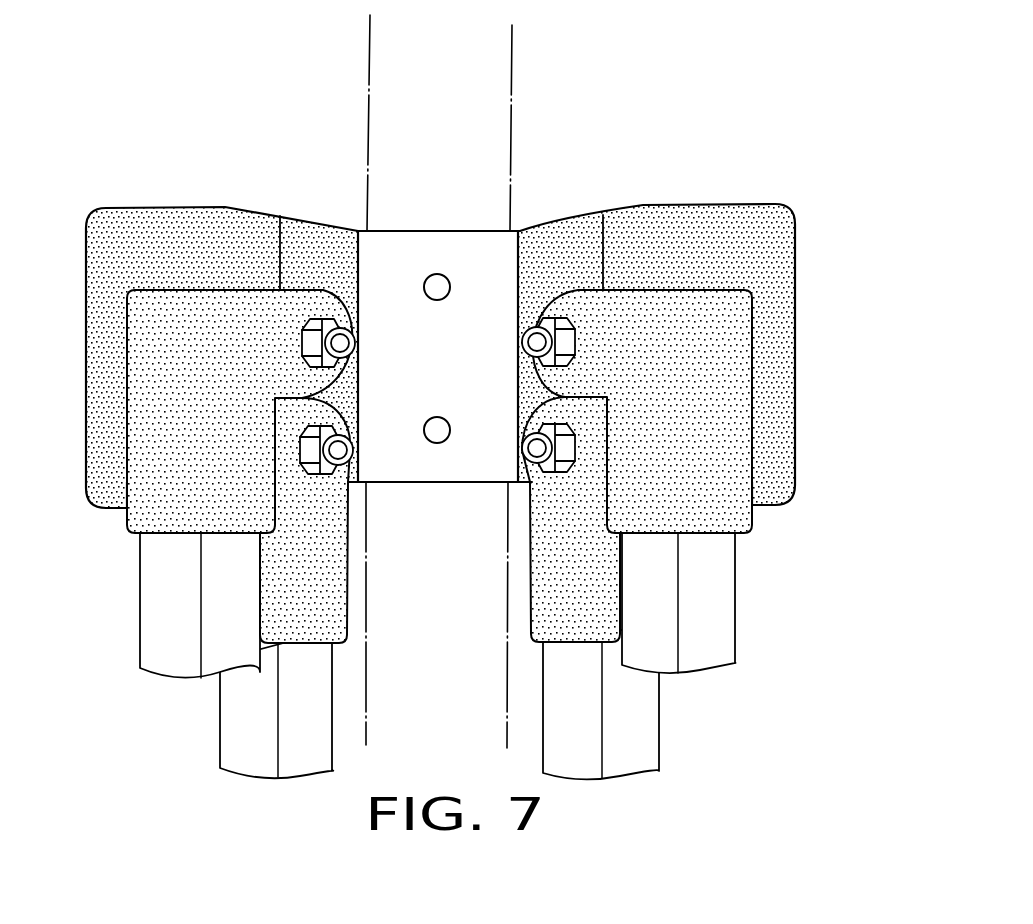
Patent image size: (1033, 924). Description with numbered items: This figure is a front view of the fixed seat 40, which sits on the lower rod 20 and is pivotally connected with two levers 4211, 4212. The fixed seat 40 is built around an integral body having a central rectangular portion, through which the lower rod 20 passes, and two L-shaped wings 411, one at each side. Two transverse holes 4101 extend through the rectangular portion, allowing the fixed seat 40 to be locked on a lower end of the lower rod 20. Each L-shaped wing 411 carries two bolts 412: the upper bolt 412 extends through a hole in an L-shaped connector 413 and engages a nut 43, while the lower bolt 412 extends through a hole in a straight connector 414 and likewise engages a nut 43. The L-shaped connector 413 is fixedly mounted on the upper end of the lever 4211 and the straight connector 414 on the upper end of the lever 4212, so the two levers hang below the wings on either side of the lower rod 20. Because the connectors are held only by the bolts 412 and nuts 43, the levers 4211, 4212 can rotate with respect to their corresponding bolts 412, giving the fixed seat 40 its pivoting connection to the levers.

The lower rod 20 is at (512, 62).
The fixed seat 40 is at (467, 397).
The L-shaped wing 411 is at (688, 203).
The L-shaped connector 413 is at (750, 365).
The straight connector 414 is at (347, 593).
The nut 43 is at (330, 302).
The bolt 412 is at (352, 463).
The transverse hole 4101 is at (440, 273).
The lever 4211 is at (735, 563).
The lever 4212 is at (220, 725).